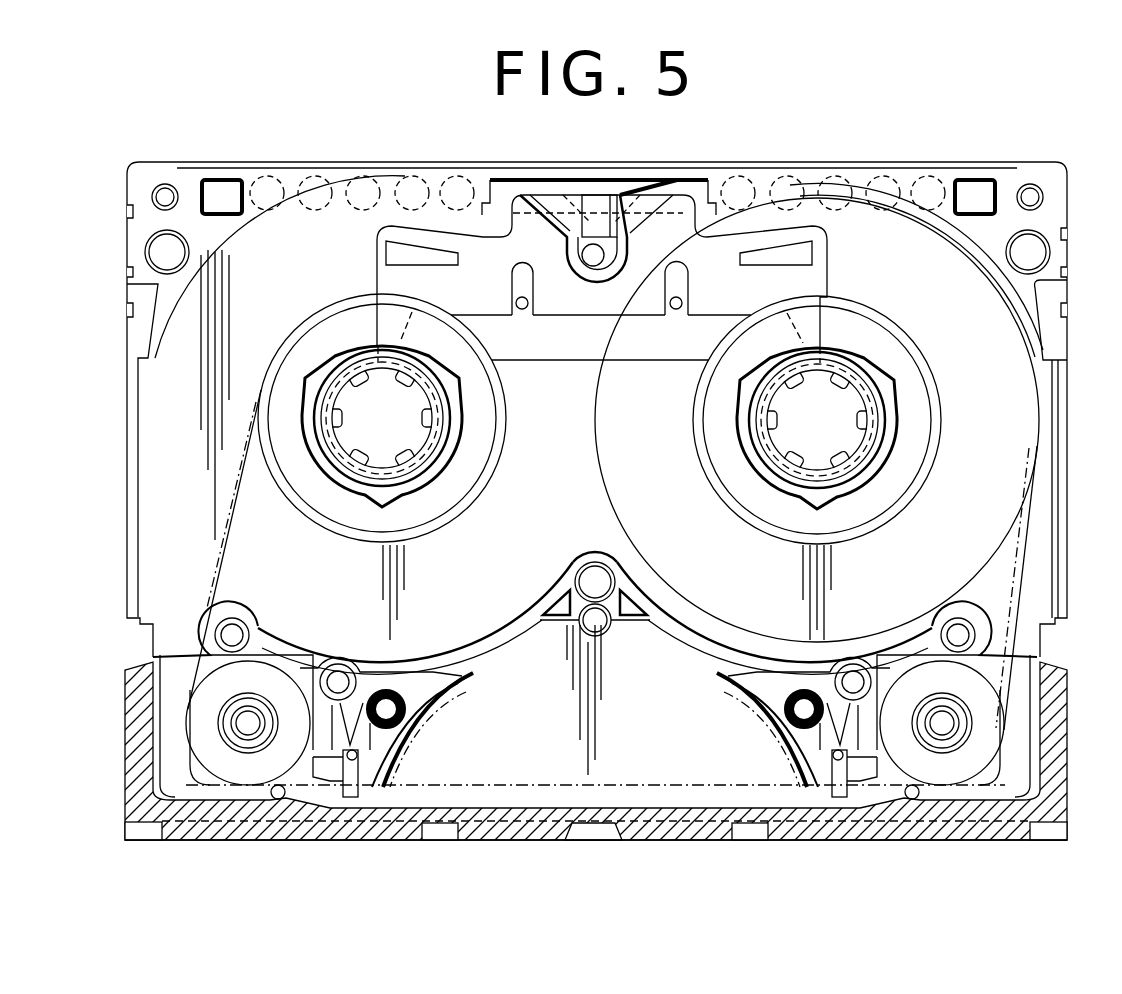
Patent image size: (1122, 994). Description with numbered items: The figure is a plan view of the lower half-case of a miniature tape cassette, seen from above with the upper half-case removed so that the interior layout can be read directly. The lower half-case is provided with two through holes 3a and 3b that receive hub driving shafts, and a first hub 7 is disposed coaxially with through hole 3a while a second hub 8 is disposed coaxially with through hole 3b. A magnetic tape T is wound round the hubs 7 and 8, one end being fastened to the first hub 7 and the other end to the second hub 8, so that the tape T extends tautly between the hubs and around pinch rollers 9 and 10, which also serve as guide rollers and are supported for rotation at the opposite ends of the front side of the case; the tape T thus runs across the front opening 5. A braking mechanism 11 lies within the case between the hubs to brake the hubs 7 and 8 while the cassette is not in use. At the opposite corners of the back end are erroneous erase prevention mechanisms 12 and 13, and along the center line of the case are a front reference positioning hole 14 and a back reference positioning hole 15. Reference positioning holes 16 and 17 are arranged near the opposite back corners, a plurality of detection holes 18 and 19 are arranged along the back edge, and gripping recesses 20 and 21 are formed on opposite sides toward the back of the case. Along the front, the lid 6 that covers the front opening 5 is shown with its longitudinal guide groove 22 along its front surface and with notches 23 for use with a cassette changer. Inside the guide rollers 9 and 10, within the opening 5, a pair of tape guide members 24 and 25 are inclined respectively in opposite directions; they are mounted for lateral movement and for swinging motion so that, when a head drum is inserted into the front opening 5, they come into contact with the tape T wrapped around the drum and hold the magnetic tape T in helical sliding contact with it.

The through hole 3a is at (359, 442).
The through hole 3b is at (833, 450).
The front opening 5 is at (690, 762).
The lid 6 is at (513, 822).
The first hub 7 is at (382, 418).
The second hub 8 is at (832, 420).
The pinch roller 9 is at (232, 765).
The pinch roller 10 is at (955, 770).
The braking mechanism 11 is at (843, 254).
The erroneous erase prevention mechanism 12 is at (224, 190).
The erroneous erase prevention mechanism 13 is at (978, 190).
The front reference positioning hole 14 is at (595, 562).
The back reference positioning hole 15 is at (595, 262).
The reference positioning hole 16 is at (156, 245).
The reference positioning hole 17 is at (1040, 244).
The detection holes 18 is at (420, 180).
The detection holes 19 is at (900, 182).
The gripping recess 20 is at (150, 297).
The gripping recess 21 is at (1050, 297).
The longitudinal guide groove 22 is at (647, 825).
The notches 23 is at (425, 848).
The tape guide member 24 is at (440, 712).
The tape guide member 25 is at (772, 712).
The magnetic tape T is at (597, 785).